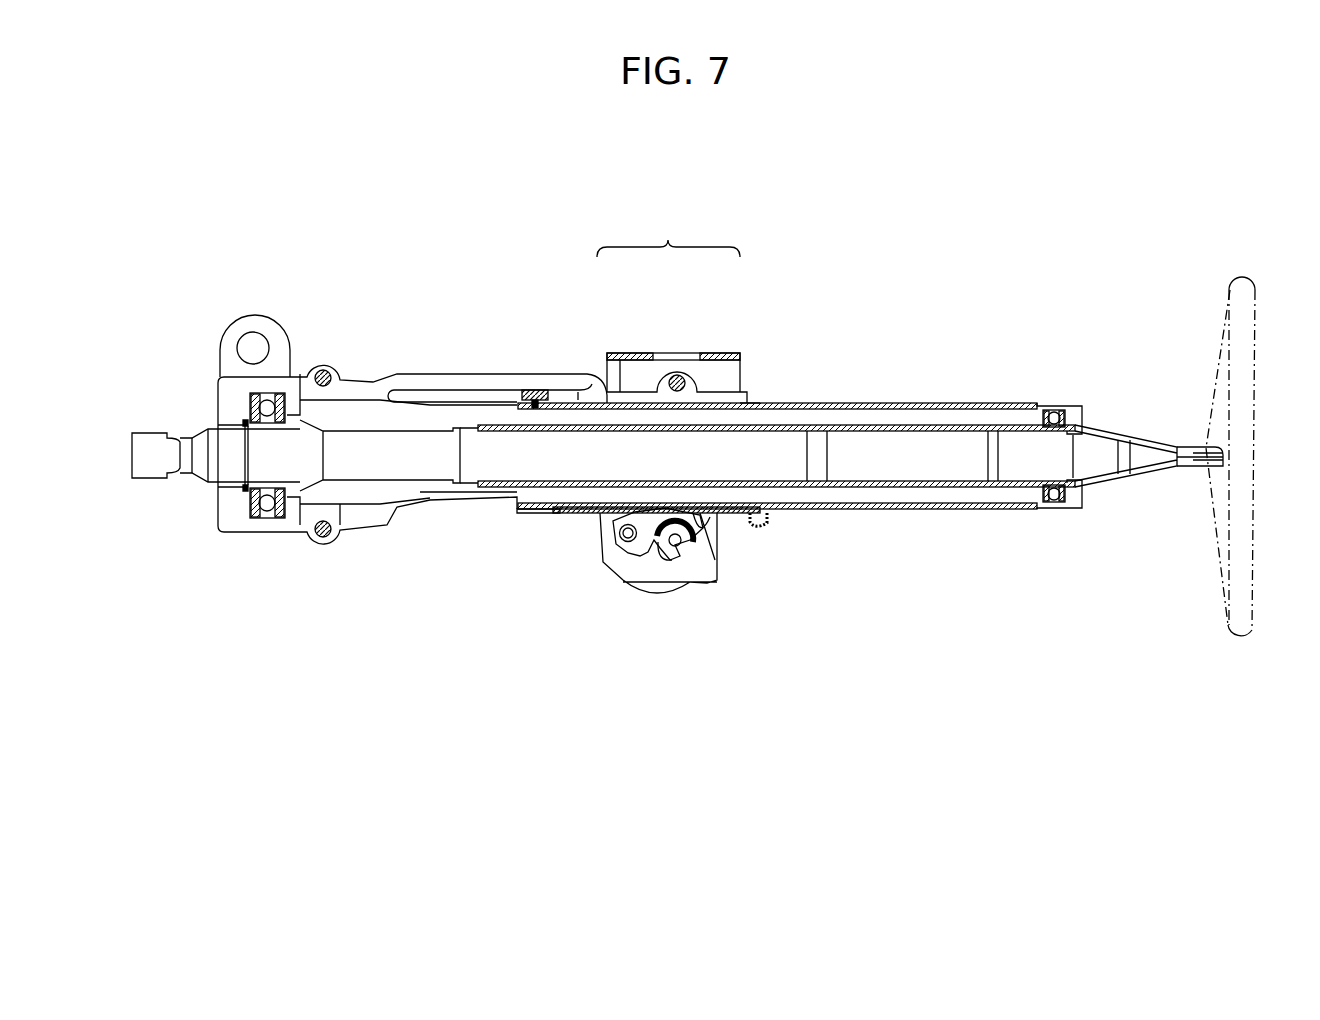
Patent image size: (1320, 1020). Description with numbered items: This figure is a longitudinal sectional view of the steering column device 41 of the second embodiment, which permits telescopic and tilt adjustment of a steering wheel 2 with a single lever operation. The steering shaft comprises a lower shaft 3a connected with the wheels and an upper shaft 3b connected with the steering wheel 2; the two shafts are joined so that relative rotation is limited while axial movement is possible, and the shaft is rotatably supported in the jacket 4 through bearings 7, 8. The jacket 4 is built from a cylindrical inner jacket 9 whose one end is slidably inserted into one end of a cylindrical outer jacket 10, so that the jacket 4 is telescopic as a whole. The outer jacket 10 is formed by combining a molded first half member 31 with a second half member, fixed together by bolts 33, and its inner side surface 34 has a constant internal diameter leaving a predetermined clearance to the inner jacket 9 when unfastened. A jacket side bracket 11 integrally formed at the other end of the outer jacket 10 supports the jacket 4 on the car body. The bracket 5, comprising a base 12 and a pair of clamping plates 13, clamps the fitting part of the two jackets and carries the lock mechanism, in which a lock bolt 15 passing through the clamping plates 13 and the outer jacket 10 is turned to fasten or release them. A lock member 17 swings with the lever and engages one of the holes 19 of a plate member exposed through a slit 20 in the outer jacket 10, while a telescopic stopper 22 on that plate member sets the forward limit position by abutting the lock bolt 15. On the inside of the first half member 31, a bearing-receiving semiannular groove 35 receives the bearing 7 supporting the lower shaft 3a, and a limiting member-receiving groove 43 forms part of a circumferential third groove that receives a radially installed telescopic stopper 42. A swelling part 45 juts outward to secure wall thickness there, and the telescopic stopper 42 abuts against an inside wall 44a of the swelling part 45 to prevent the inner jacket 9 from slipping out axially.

The steering wheel 2 is at (1240, 295).
The lower shaft 3a is at (160, 470).
The upper shaft 3b is at (1138, 482).
The jacket 4 is at (668, 237).
The bracket 5 is at (584, 660).
The bearing 7 is at (262, 512).
The bearing 8 is at (1048, 512).
The inner jacket 9 is at (822, 403).
The outer jacket 10 is at (563, 385).
The jacket side bracket 11 is at (253, 325).
The base 12 is at (552, 513).
The clamping plates 13 is at (633, 588).
The lock bolt 15 is at (674, 547).
The lock member 17 is at (645, 548).
The holes 19 is at (710, 517).
The slit 20 is at (403, 507).
The telescopic stopper 22 is at (767, 522).
The molded first half member 31 is at (293, 525).
The bolt 33 is at (325, 370).
The inner side surface 34 is at (752, 405).
The bearing-receiving semiannular groove 35 is at (277, 517).
The steering column device 41 is at (930, 358).
The telescopic stopper 42 is at (530, 390).
The limiting member-receiving groove 43 is at (462, 388).
The inside wall 44a is at (587, 402).
The swelling part 45 is at (410, 385).